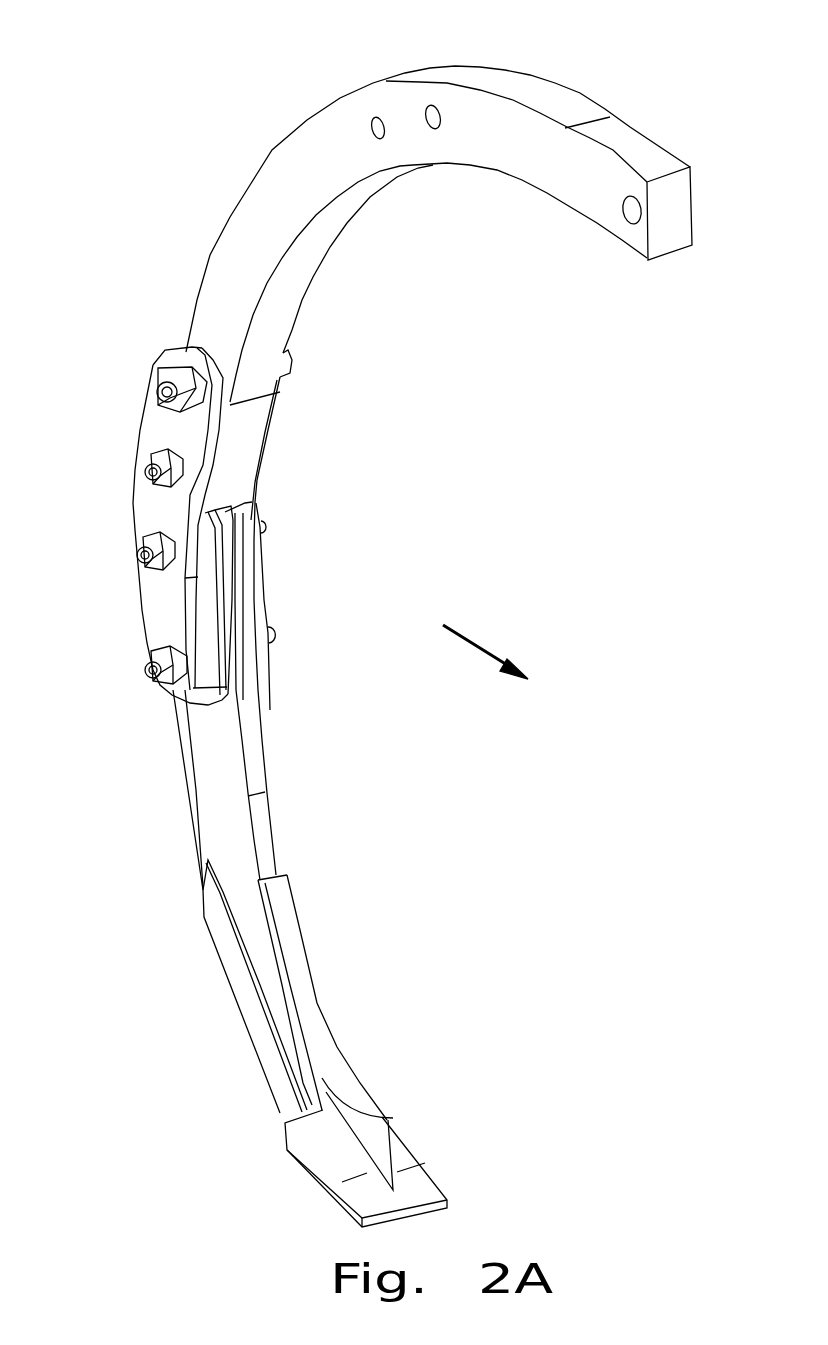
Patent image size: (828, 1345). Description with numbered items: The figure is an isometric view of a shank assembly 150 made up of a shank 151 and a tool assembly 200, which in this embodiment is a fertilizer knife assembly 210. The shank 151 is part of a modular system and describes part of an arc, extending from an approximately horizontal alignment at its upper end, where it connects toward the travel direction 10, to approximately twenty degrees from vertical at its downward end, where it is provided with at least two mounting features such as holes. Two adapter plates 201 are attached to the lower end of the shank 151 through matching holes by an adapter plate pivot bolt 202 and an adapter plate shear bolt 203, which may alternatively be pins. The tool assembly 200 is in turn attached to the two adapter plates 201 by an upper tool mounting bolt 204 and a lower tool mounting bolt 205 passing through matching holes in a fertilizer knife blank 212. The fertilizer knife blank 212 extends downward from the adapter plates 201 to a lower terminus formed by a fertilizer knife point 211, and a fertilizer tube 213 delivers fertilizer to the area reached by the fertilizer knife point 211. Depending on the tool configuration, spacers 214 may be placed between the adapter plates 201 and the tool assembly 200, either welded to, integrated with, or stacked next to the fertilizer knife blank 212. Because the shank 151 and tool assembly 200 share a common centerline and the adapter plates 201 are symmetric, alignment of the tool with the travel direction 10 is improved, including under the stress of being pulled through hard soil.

The travel direction 10 is at (483, 650).
The shank assembly 150 is at (562, 203).
The shank 151 is at (538, 77).
The tool assembly 200 is at (273, 826).
The adapter plates 201 is at (130, 510).
The adapter plate pivot bolt 202 is at (160, 390).
The adapter plate shear bolt 203 is at (148, 472).
The upper tool mounting bolt 204 is at (140, 558).
The lower tool mounting bolt 205 is at (150, 672).
The fertilizer knife assembly 210 is at (313, 968).
The fertilizer knife point 211 is at (433, 1182).
The fertilizer knife blank 212 is at (267, 745).
The fertilizer tube 213 is at (183, 755).
The spacers 214 is at (215, 593).